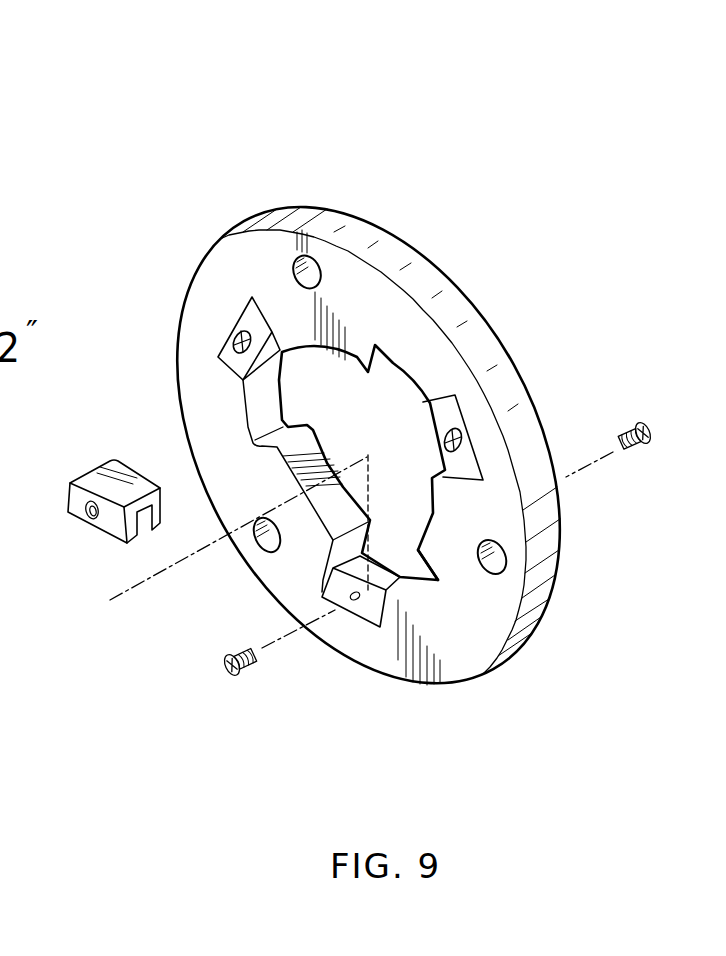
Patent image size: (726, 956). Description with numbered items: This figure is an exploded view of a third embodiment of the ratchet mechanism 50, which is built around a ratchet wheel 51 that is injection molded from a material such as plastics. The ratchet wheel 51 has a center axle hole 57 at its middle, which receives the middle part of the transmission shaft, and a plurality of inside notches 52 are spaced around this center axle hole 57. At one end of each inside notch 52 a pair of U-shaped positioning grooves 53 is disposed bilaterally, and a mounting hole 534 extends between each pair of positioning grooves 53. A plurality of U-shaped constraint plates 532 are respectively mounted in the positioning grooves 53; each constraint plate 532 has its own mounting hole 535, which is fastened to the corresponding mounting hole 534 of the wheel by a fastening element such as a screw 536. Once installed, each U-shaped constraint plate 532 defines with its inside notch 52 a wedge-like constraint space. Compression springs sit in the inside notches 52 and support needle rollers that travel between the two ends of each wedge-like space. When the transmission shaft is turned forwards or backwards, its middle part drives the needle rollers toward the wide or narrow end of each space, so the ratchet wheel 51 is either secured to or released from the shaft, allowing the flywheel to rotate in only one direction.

The ratchet mechanism 50 is at (368, 405).
The ratchet wheel 51 is at (447, 305).
The inside notch 52 is at (490, 727).
The U-shaped positioning groove 53 is at (275, 598).
The center axle hole 57 is at (440, 580).
The U-shaped constraint plate 532 is at (595, 391).
The mounting hole 534 is at (352, 600).
The mounting hole 535 is at (87, 522).
The screw 536 is at (437, 606).